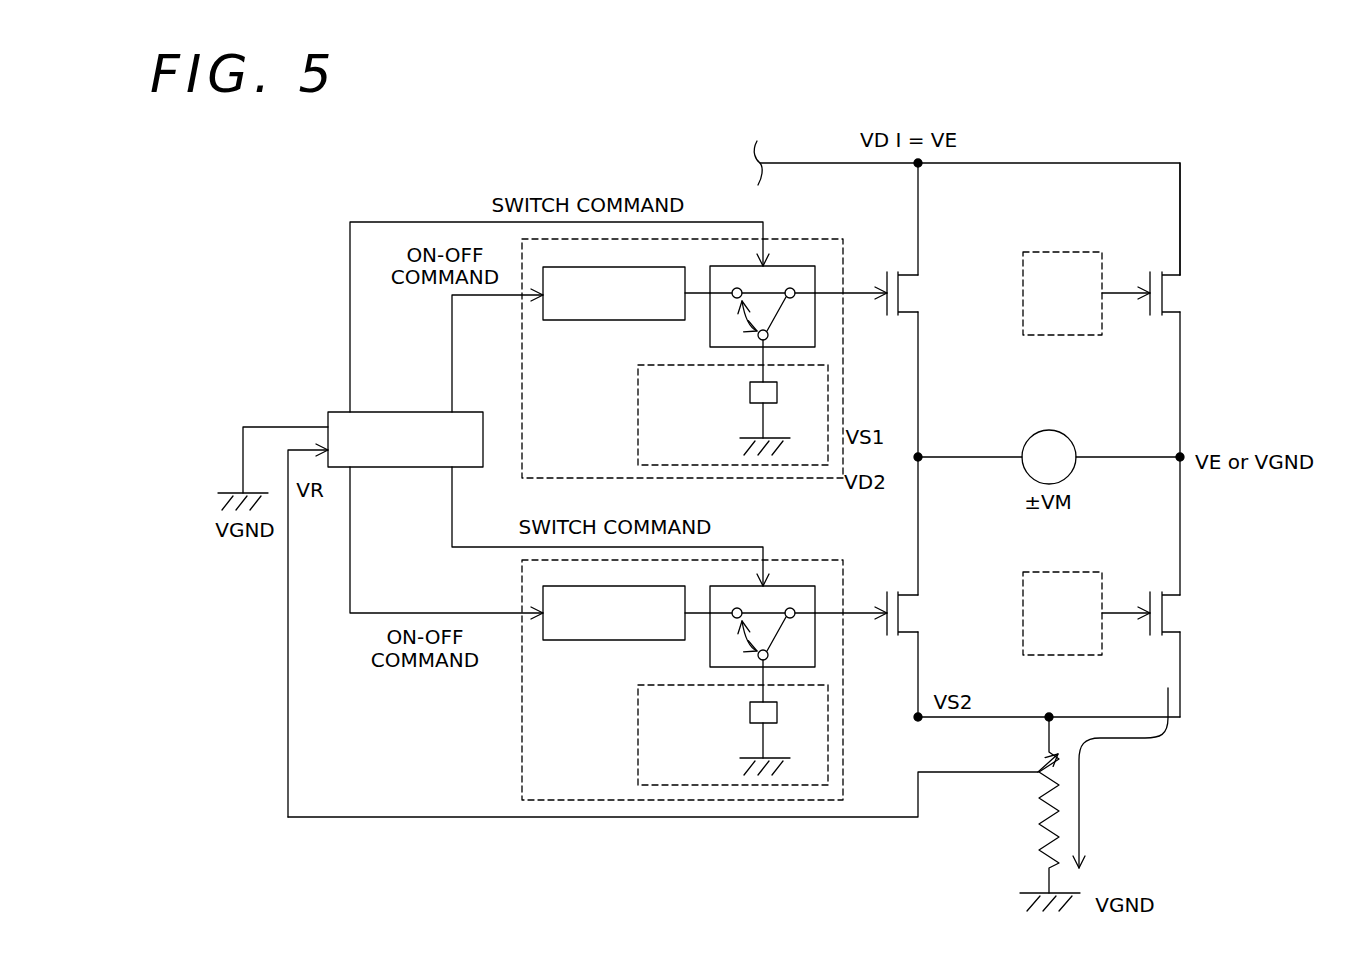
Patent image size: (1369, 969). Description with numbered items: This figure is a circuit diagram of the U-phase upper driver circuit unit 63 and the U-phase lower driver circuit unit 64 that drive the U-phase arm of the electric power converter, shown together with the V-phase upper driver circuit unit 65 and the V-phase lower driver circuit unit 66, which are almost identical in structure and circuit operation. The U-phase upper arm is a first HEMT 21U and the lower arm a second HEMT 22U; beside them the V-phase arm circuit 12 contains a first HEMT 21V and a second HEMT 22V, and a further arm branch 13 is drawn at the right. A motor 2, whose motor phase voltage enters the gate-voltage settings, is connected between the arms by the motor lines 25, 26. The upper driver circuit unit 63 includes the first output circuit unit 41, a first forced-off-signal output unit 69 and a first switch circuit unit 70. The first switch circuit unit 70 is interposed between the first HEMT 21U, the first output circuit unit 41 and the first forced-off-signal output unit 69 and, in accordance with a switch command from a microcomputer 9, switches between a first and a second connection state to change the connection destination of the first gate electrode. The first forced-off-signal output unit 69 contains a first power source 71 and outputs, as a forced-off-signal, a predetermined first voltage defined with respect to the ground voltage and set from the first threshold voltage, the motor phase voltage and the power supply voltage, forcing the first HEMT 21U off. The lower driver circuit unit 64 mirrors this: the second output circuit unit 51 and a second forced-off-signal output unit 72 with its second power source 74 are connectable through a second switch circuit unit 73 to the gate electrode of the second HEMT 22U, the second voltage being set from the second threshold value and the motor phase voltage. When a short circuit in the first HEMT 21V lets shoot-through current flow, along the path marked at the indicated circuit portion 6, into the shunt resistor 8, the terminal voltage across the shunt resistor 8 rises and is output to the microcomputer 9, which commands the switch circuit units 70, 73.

The motor 2 is at (1047, 430).
The drive circuit 6 is at (1172, 750).
The shunt resistor 8 is at (1040, 838).
The microcomputer 9 is at (345, 412).
The V-phase arm circuit 12 is at (920, 190).
The second power supply line 13 is at (1180, 202).
The first HEMT 21U is at (887, 275).
The first HEMT 21V is at (1150, 275).
The second HEMT 22U is at (887, 595).
The second HEMT 22V is at (1150, 595).
The first motor terminal line 25 is at (968, 457).
The second motor terminal line 26 is at (1131, 457).
The first output circuit unit 41 is at (570, 318).
The second output circuit unit 51 is at (570, 640).
The U-phase upper driver circuit unit 63 is at (822, 240).
The U-phase lower driver circuit unit 64 is at (822, 560).
The V-phase upper driver circuit unit 65 is at (1023, 292).
The V-phase lower driver circuit unit 66 is at (1023, 610).
The first forced-off-signal output unit 69 is at (638, 407).
The first switch circuit unit 70 is at (782, 268).
The first power source 71 is at (750, 392).
The second forced-off-signal output unit 72 is at (638, 727).
The second switch circuit unit 73 is at (782, 588).
The second power source 74 is at (750, 712).